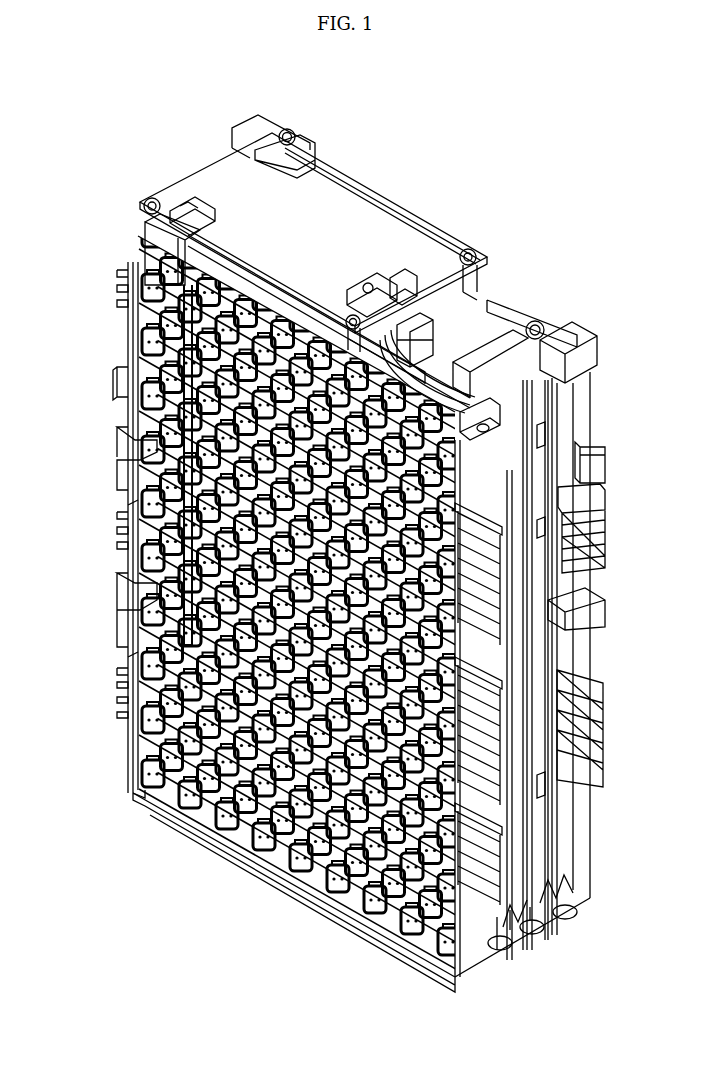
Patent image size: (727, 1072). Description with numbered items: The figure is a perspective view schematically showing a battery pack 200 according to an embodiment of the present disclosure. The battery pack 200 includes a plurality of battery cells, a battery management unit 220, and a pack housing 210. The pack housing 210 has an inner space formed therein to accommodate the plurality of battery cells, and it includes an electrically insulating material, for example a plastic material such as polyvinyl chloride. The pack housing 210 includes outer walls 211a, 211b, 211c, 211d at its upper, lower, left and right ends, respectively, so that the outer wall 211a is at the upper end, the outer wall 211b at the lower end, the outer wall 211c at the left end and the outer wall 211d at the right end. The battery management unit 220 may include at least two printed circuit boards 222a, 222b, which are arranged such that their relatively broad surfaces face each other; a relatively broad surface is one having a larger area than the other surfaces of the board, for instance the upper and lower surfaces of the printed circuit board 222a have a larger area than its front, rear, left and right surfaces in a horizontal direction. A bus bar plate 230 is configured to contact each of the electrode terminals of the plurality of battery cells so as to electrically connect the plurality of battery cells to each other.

The battery pack 200 is at (190, 95).
The pack housing 210 is at (612, 316).
The outer wall 211a is at (245, 318).
The outer wall 211b is at (255, 872).
The outer wall 211c is at (128, 755).
The outer wall 211d is at (570, 855).
The battery management unit 220 is at (481, 207).
The printed circuit board 222a is at (183, 284).
The printed circuit board 222b is at (374, 192).
The bus bar plate 230 is at (117, 630).